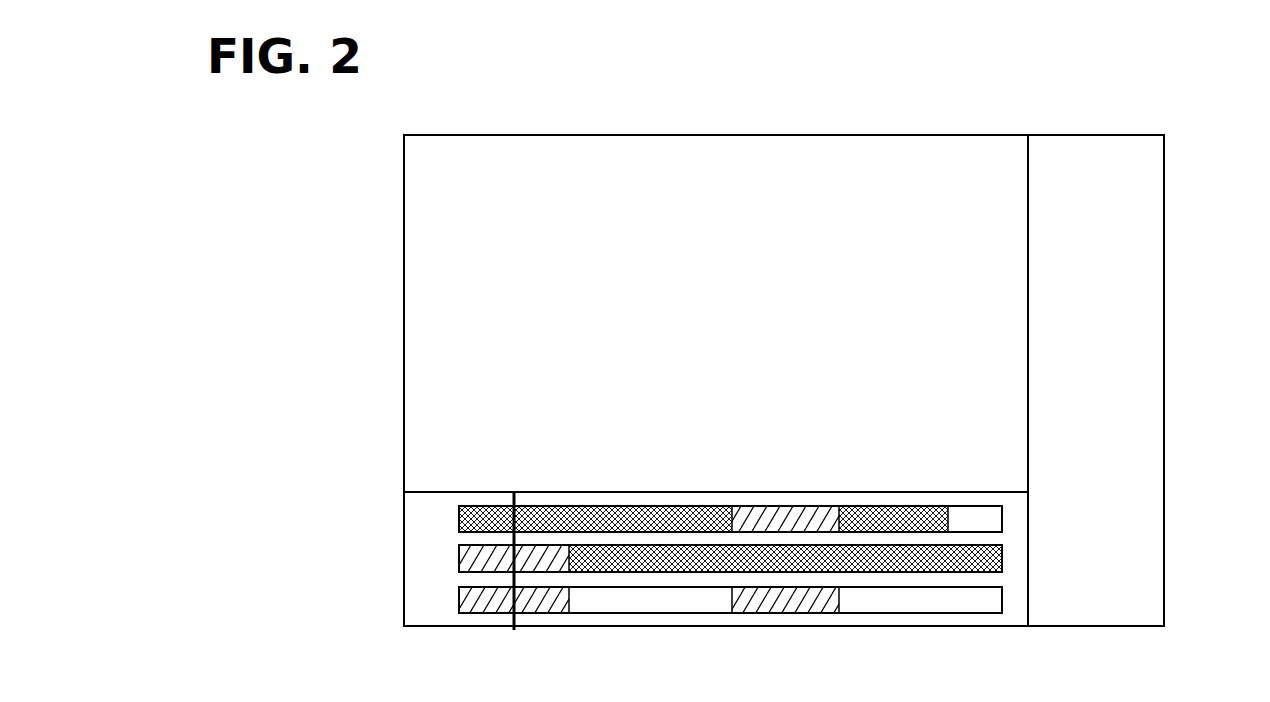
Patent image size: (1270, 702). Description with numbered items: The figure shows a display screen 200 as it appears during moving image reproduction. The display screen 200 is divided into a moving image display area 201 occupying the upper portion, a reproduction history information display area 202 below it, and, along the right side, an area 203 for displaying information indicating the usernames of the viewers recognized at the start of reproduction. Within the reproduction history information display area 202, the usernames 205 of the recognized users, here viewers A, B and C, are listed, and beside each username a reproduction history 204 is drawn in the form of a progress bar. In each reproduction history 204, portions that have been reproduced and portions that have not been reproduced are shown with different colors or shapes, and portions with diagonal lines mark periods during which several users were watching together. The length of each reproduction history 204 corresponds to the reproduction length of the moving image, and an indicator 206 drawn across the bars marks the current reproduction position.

The display screen 200 is at (592, 76).
The moving image display area 201 is at (781, 135).
The reproduction history information display area 202 is at (675, 585).
The area for displaying information indicating usernames 203 is at (1164, 186).
The reproduction histories 204 is at (888, 613).
The usernames 205 is at (452, 618).
The indicator 206 is at (516, 618).